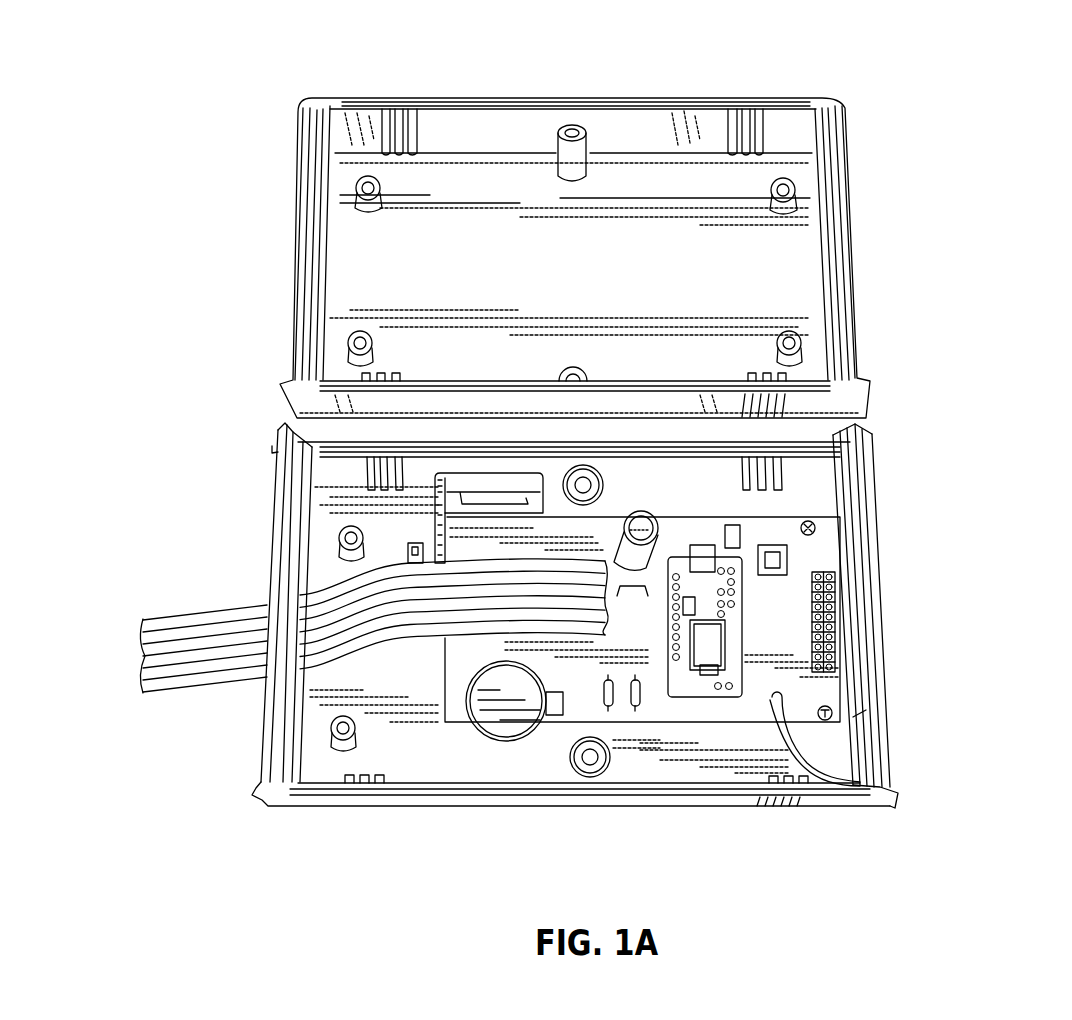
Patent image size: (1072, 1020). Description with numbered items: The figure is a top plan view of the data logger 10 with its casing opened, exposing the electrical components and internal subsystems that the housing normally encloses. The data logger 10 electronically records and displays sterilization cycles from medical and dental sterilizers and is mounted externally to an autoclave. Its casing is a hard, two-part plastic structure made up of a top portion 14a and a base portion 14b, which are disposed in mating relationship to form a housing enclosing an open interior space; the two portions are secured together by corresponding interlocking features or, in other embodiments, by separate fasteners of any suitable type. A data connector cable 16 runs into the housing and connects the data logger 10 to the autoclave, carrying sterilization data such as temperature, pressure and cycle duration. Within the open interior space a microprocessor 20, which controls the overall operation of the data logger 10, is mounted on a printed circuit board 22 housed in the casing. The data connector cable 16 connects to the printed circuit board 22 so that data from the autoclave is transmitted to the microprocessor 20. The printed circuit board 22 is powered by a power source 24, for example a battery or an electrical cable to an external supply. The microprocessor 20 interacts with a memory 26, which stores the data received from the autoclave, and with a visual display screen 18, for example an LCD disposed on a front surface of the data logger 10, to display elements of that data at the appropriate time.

The data logger 10 is at (978, 212).
The top portion 14a is at (822, 102).
The base portion 14b is at (880, 805).
The data connector cable 16 is at (192, 684).
The visual display screen 18 is at (880, 620).
The microprocessor 20 is at (670, 700).
The printed circuit board 22 is at (717, 723).
The power source 24 is at (660, 528).
The memory 26 is at (437, 510).